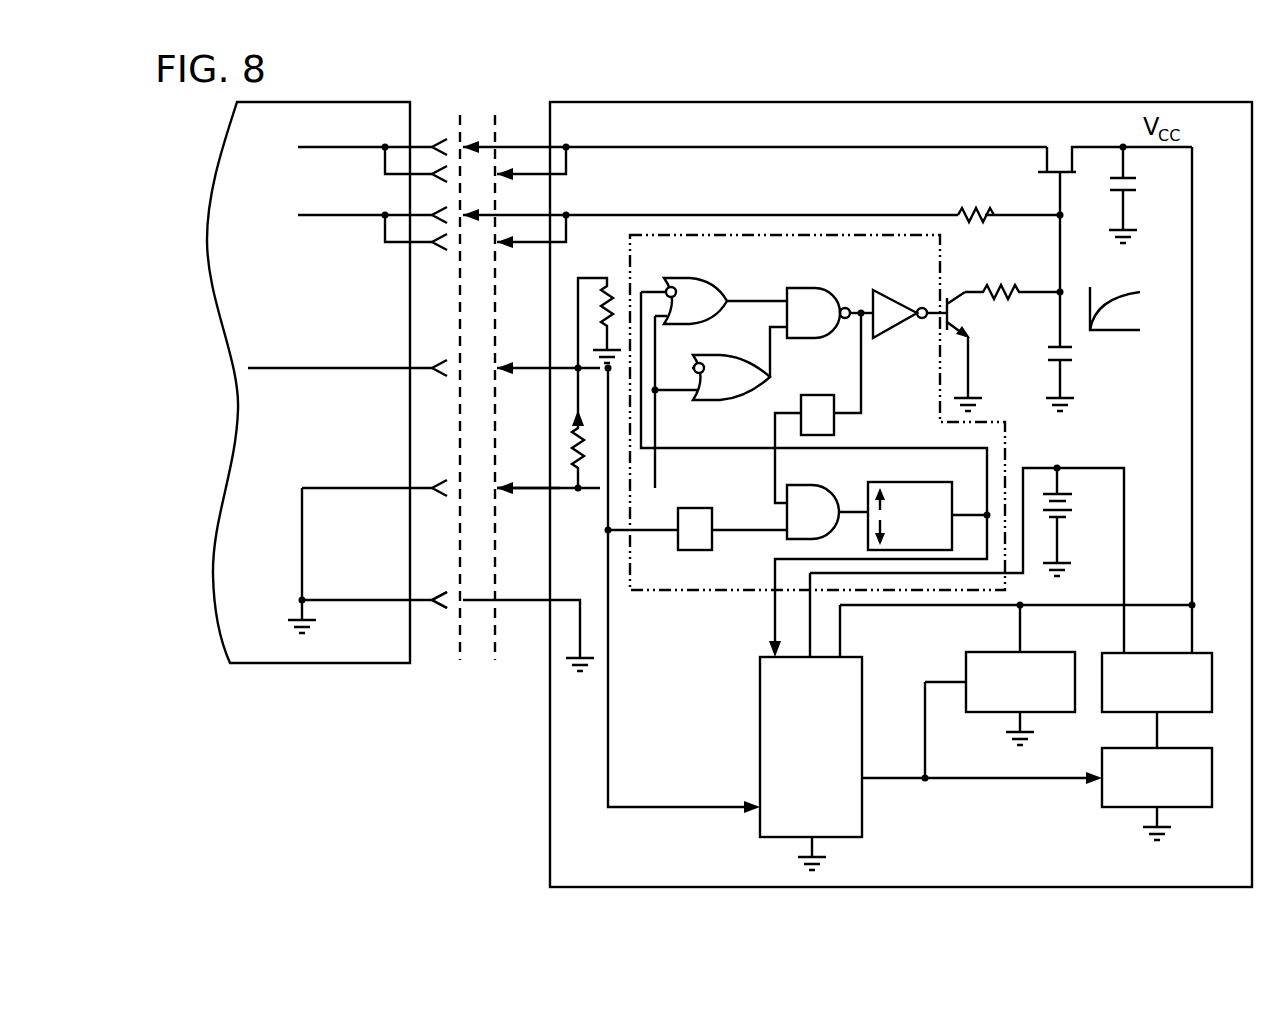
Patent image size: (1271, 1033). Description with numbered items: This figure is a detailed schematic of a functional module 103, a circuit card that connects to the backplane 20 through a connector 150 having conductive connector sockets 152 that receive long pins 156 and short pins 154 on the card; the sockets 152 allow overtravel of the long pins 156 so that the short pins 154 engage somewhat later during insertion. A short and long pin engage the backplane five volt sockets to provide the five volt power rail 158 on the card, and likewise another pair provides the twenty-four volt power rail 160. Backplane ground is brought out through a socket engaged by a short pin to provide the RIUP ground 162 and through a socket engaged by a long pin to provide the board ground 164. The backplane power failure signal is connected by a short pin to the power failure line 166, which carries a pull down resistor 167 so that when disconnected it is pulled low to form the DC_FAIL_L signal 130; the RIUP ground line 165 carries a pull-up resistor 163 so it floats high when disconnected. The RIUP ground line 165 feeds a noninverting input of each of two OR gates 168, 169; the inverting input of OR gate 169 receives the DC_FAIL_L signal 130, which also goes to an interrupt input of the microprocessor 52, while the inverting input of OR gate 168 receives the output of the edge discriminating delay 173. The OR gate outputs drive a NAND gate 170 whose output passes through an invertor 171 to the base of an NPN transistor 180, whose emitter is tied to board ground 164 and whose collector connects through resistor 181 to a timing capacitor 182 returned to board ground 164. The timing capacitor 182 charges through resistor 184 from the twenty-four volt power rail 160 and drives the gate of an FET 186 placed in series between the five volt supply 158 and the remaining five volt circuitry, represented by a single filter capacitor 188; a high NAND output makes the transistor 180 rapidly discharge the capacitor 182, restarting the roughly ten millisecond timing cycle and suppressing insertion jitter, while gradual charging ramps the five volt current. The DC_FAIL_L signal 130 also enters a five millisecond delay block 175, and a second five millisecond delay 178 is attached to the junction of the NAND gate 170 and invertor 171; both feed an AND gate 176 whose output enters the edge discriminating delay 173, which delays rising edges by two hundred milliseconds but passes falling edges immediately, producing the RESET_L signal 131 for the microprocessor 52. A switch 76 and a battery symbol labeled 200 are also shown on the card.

The backplane 20 is at (342, 86).
The connector 150 is at (412, 92).
The functional module 103 is at (1082, 86).
The five volt power rail 158 is at (695, 144).
The 24 volt power rail 160 is at (655, 212).
The resistor 184 is at (976, 212).
The FET 186 is at (1045, 176).
The filter capacitor 188 is at (1128, 195).
The pull down resistor 167 is at (608, 292).
The pull-up resistor 163 is at (593, 442).
The OR gate 168 is at (712, 286).
The OR gate 169 is at (738, 398).
The NAND gate 170 is at (812, 288).
The invertor 171 is at (893, 288).
The NPN transistor 180 is at (982, 318).
The resistor 181 is at (1000, 290).
The timing capacitor 182 is at (1068, 362).
The 5 millisecond delay 178 is at (832, 394).
The 5 millisecond delay block 175 is at (692, 506).
The AND gate 176 is at (800, 492).
The edge discriminating delay 173 is at (905, 470).
The battery 200 is at (1073, 502).
The RESET_L signal 131 is at (773, 576).
The power failure line 166 is at (530, 365).
The RIUP ground line 165 is at (535, 485).
The RIUP ground 162 is at (355, 492).
The connector sockets 152 is at (437, 606).
The short pins 154 is at (528, 492).
The long pins 156 is at (523, 604).
The board ground 164 is at (587, 618).
The DC_FAIL_L signal 130 is at (610, 745).
The microprocessor 52 is at (758, 688).
The switch 76 is at (1205, 650).